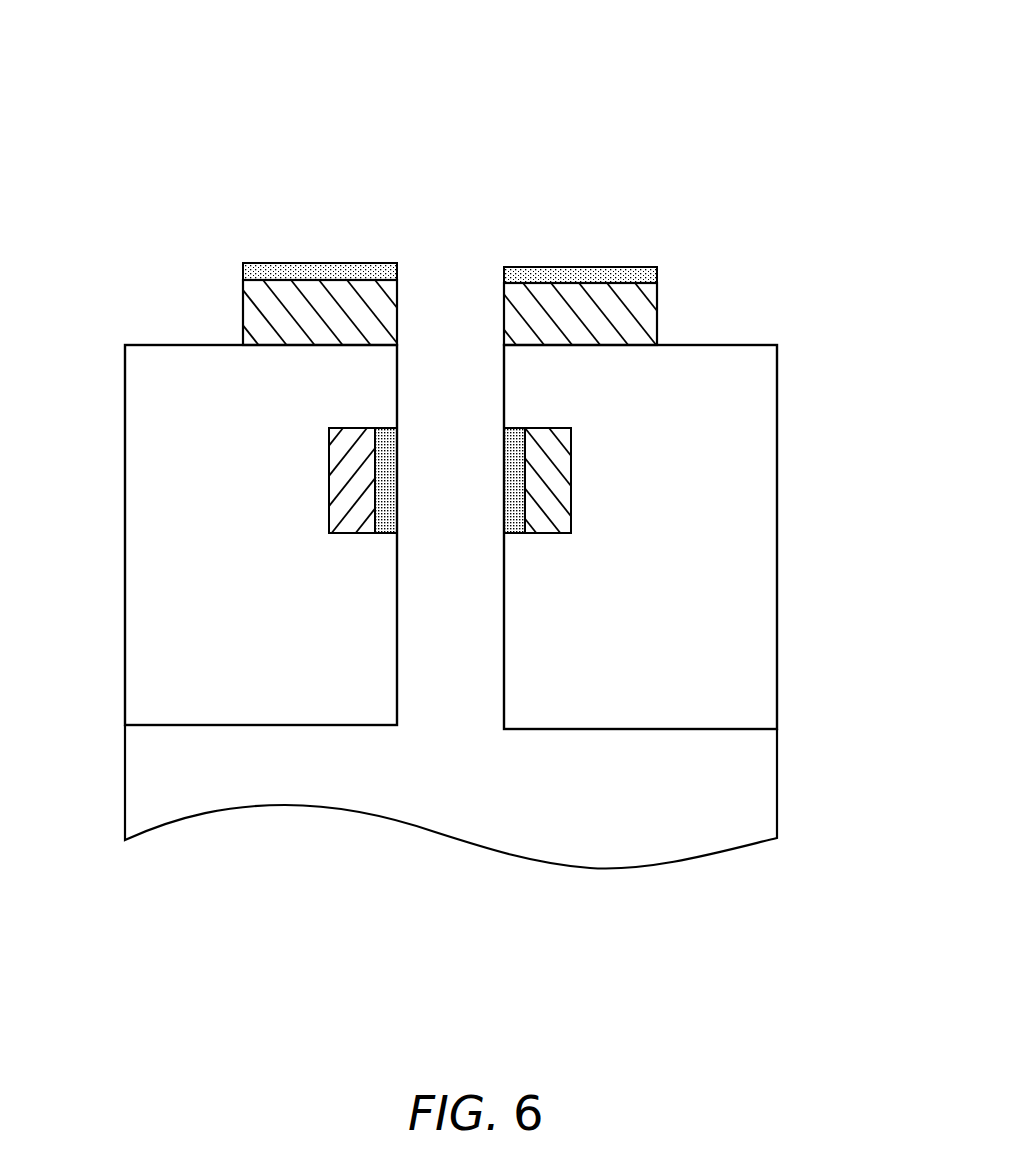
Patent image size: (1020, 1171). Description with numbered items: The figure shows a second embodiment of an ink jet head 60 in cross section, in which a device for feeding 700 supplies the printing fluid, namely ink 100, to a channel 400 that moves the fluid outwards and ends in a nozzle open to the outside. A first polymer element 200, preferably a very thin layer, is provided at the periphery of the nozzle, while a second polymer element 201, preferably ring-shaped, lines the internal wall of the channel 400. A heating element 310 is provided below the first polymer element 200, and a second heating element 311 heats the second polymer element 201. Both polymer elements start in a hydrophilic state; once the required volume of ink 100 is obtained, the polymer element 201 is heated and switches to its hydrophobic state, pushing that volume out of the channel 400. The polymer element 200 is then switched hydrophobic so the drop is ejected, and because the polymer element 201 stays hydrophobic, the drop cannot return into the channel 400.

The ink jet head 60 is at (126, 291).
The ink 100 is at (777, 787).
The first polymer element 200 is at (623, 270).
The second polymer element 201 is at (519, 440).
The heating element 310 is at (255, 312).
The heating element 311 is at (570, 505).
The channel 400 is at (505, 653).
The device for feeding 700 is at (260, 777).